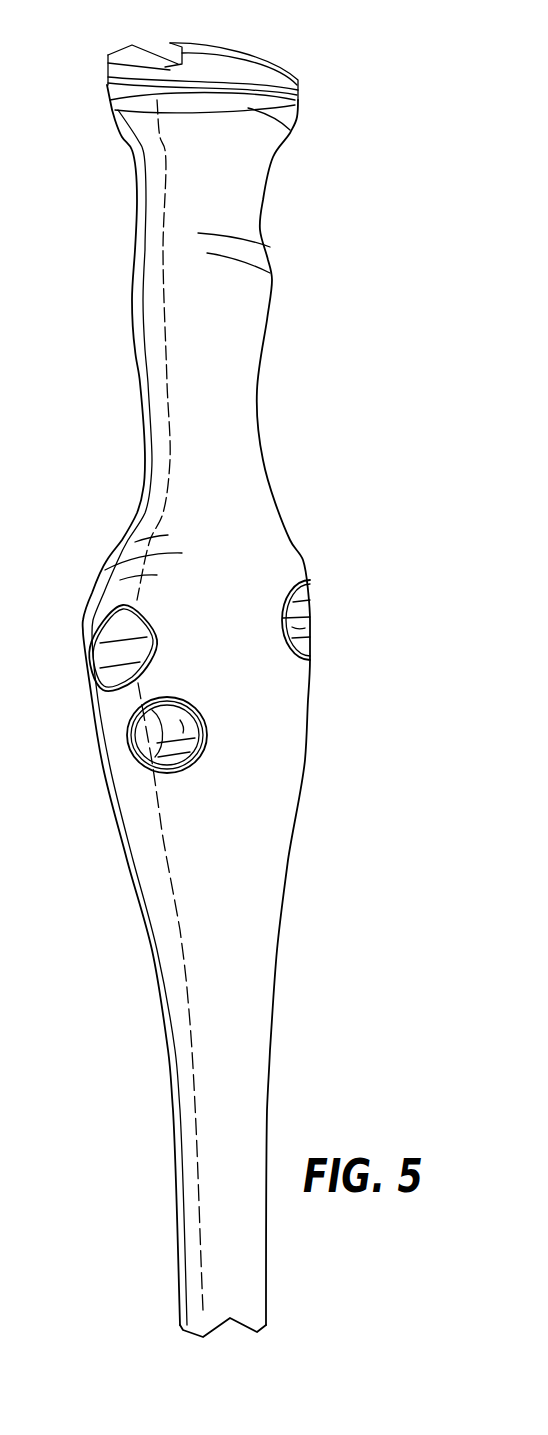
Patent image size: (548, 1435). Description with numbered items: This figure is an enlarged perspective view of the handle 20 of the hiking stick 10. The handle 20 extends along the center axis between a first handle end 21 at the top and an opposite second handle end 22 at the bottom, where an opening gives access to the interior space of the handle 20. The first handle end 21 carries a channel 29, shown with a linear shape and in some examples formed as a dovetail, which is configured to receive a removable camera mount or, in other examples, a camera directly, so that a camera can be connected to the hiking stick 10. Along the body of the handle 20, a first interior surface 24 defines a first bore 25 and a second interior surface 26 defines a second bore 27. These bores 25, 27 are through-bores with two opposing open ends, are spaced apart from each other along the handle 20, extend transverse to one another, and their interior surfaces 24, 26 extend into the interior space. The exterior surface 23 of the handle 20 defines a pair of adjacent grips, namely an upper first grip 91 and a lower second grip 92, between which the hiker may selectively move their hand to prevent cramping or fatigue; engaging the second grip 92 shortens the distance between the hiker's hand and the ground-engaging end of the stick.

The hiking stick 10 is at (328, 318).
The handle 20 is at (267, 843).
The first handle end 21 is at (308, 80).
The second handle end 22 is at (147, 1298).
The exterior surface 23 is at (213, 1143).
The first interior surface 24 is at (312, 625).
The first bore 25 is at (297, 602).
The second interior surface 26 is at (207, 735).
The second bore 27 is at (145, 733).
The channel 29 is at (157, 43).
The first grip 91 is at (188, 212).
The second grip 92 is at (190, 518).